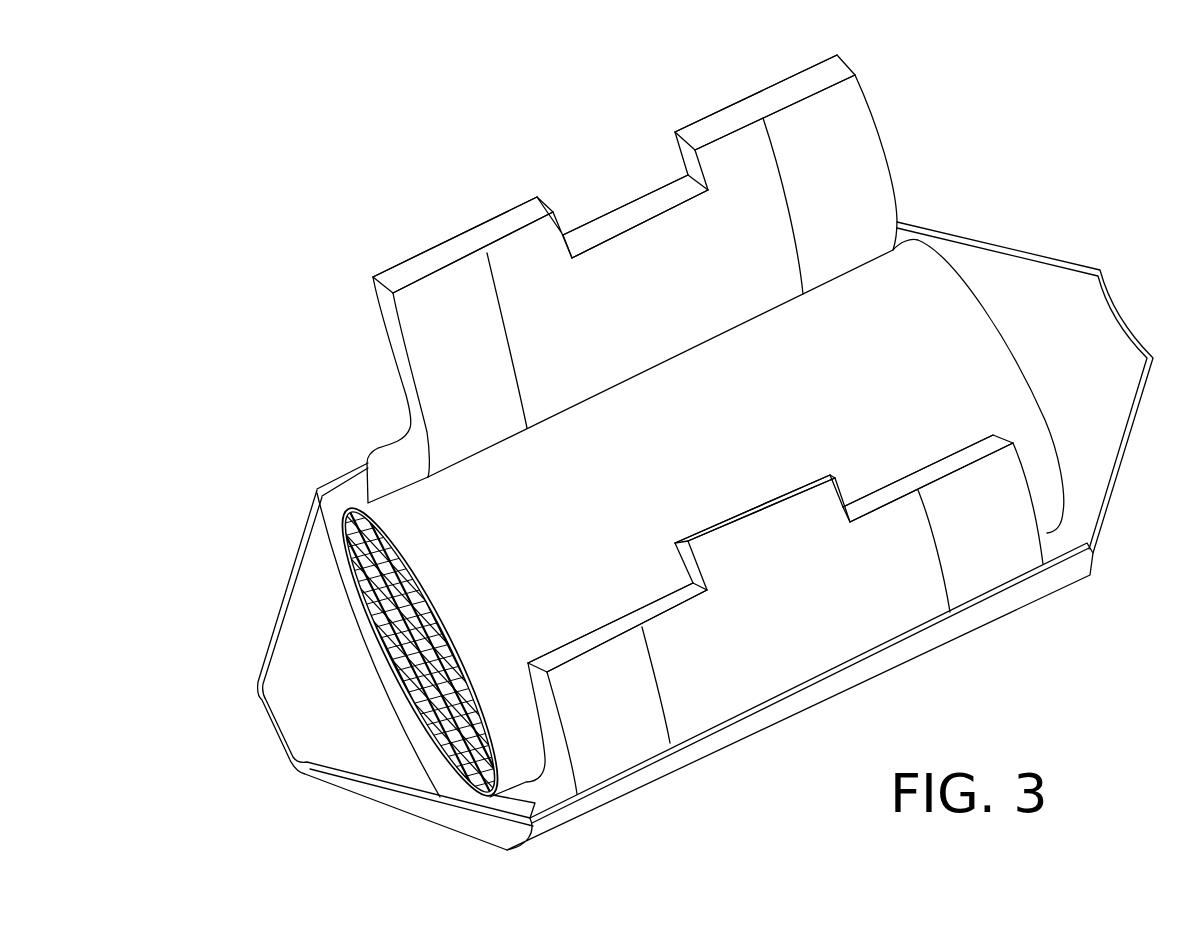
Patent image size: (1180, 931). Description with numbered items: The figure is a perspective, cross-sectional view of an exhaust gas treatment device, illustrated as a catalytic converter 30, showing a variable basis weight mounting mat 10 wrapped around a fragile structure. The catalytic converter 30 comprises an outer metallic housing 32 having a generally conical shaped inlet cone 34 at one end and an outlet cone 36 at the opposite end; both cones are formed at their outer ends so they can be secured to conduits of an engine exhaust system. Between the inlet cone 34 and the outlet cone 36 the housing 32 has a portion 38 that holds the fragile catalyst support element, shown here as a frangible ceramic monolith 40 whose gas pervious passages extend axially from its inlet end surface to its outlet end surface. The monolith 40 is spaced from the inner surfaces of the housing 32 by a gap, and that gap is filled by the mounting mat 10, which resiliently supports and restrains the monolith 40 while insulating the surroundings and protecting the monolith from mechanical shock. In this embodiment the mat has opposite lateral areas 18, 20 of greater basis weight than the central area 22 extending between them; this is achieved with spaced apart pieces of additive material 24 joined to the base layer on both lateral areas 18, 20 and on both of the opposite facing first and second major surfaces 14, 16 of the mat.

The mounting mat 10 is at (530, 243).
The first major surface 14 is at (897, 527).
The second major surface 16 is at (732, 148).
The lateral area 18 is at (437, 290).
The lateral area 20 is at (810, 108).
The area 22 is at (636, 302).
The additive material 24 is at (427, 337).
The catalytic converter 30 is at (296, 205).
The housing 32 is at (345, 472).
The inlet cone 34 is at (272, 630).
The outlet cone 36 is at (1033, 253).
The portion 38 is at (872, 657).
The ceramic monolith 40 is at (347, 517).